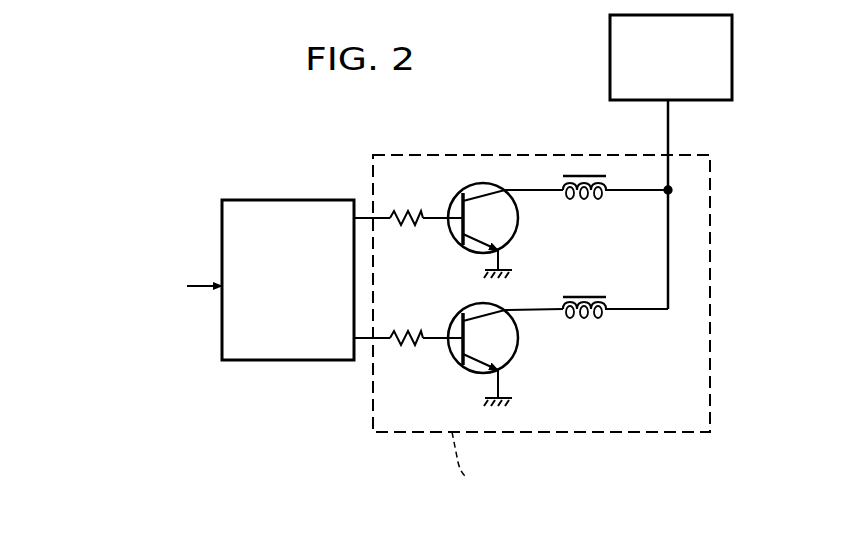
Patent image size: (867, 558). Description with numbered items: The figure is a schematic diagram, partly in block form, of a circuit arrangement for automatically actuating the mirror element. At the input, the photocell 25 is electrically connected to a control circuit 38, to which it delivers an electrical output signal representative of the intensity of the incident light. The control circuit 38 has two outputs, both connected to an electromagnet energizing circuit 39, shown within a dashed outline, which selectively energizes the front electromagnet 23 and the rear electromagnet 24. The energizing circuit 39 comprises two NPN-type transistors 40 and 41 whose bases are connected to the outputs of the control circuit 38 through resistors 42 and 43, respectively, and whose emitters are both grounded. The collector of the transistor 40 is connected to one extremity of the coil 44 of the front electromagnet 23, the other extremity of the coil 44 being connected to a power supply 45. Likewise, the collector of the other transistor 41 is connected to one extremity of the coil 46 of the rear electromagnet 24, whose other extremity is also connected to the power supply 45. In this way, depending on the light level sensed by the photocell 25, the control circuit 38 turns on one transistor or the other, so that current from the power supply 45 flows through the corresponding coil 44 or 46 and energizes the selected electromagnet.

The control circuit 38 is at (278, 200).
The photocell 25 is at (122, 279).
The power supply 45 is at (610, 60).
The electromagnet energizing circuit 39 is at (453, 154).
The transistor 40 is at (518, 228).
The transistor 41 is at (519, 348).
The resistor 42 is at (407, 226).
The resistor 43 is at (407, 346).
The front electromagnet 23 is at (615, 219).
The rear electromagnet 24 is at (615, 340).
The coil 44 is at (598, 195).
The coil 46 is at (596, 314).